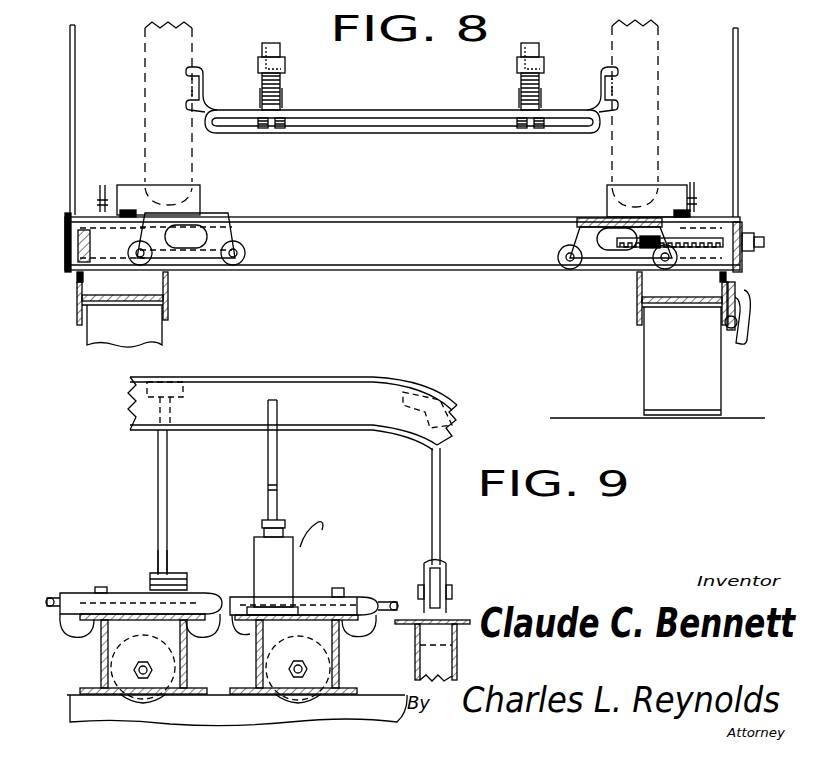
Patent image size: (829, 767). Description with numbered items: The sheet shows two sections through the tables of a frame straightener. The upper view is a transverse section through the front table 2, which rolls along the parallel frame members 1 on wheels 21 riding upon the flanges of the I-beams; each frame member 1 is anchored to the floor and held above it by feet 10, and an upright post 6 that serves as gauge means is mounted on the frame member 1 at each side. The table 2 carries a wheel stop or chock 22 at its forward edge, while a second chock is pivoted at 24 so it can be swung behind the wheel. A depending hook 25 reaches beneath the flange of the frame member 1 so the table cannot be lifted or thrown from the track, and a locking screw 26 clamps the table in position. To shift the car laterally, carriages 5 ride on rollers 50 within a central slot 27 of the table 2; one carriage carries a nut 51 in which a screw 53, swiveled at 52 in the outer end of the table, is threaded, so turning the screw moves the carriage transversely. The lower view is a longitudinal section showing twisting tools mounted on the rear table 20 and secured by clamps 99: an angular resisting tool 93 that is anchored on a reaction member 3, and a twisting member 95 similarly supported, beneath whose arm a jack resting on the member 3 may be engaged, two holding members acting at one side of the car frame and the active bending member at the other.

In FIG. 8, the frame member 1 is at (97, 302).
In FIG. 9, the frame member 1 is at (72, 712).
In FIG. 8, the table 2 is at (416, 218).
In FIG. 9, the reaction member 3 is at (413, 642).
In FIG. 8, the carriage 5 is at (208, 214).
In FIG. 8, the upright post 6 is at (75, 85).
In FIG. 8, the foot 10 is at (145, 328).
In FIG. 9, the rear table 20 is at (338, 645).
In FIG. 8, the wheel 21 is at (65, 235).
In FIG. 9, the wheel 21 is at (155, 695).
In FIG. 8, the wheel stop or chock 22 is at (660, 195).
In FIG. 8, the pivot 24 is at (690, 212).
In FIG. 8, the depending hook 25 is at (735, 335).
In FIG. 8, the locking screw 26 is at (744, 300).
In FIG. 9, the central slot 27 is at (223, 594).
In FIG. 8, the roller 50 is at (153, 260).
In FIG. 8, the nut 51 is at (650, 250).
In FIG. 8, the swivel 52 is at (747, 235).
In FIG. 8, the screw 53 is at (706, 240).
In FIG. 9, the resisting tool 93 is at (168, 466).
In FIG. 9, the twisting member 95 is at (277, 450).
In FIG. 9, the clamp 99 is at (122, 593).